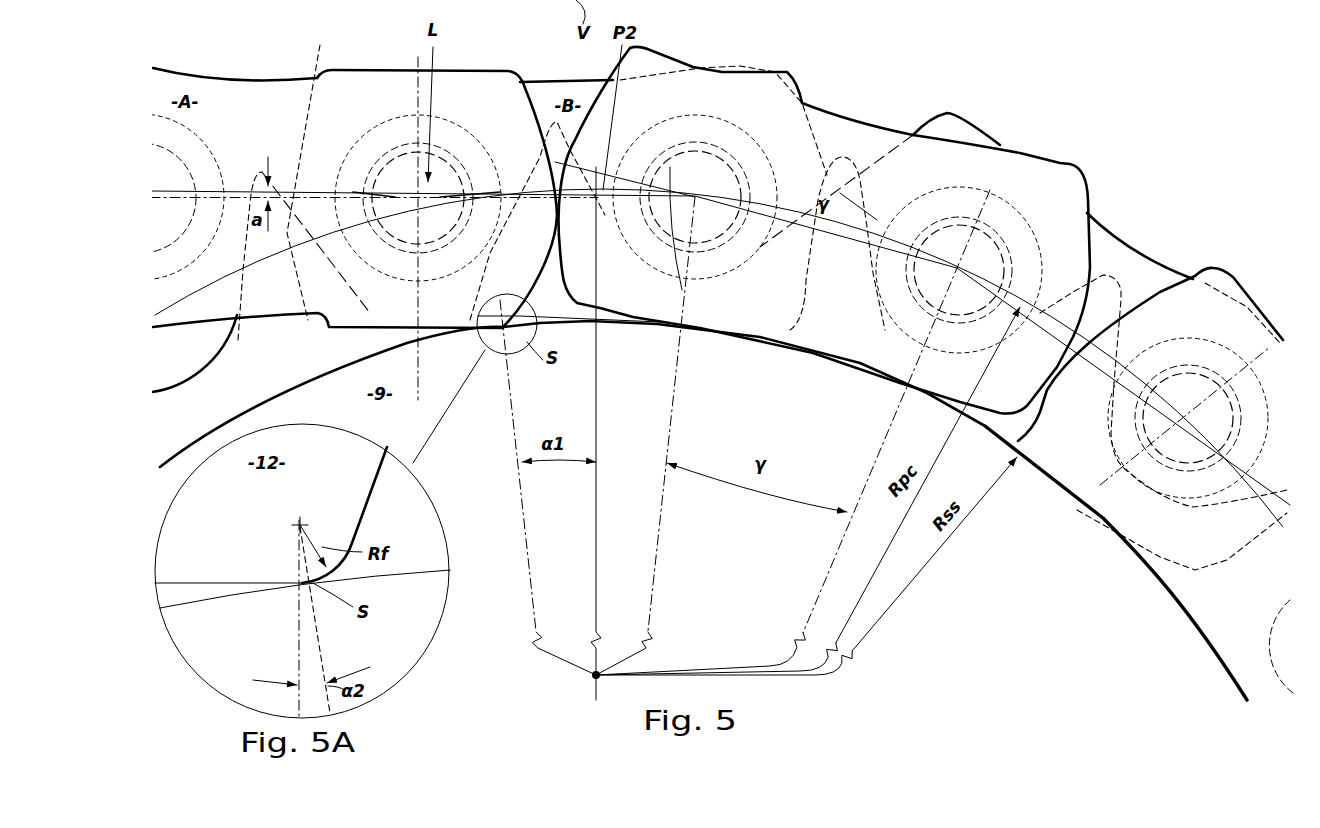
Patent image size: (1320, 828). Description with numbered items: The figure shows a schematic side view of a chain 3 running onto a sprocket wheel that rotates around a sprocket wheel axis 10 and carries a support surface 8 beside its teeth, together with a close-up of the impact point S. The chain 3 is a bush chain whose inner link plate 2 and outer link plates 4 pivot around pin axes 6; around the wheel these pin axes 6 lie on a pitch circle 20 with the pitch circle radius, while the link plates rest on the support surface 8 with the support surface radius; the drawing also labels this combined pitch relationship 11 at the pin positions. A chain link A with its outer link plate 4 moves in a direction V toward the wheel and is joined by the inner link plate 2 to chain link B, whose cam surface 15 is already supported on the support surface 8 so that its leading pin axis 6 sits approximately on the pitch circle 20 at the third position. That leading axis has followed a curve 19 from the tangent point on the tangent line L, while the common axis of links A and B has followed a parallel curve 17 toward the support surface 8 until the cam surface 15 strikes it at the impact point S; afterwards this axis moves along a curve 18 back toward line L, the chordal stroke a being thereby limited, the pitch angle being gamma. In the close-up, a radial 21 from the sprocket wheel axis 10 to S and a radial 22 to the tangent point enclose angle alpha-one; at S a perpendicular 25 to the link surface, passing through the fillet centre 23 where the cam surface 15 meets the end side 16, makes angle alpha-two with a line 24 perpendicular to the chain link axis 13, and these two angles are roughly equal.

In FIG. 5, the inner link plate 2 is at (545, 87).
In FIG. 5, the chain 3 is at (840, 84).
In FIG. 5, the outer link plate 4 is at (198, 85).
In FIG. 5, the pin axis 6 is at (418, 200).
In FIG. 5, the support surface 8 is at (295, 383).
In FIG. 5A, the support surface 8 is at (423, 566).
In FIG. 5, the sprocket wheel axis 10 is at (593, 678).
In FIG. 5, the pitch line 11 is at (240, 187).
In FIG. 5, the chain link axis 13 is at (321, 200).
In FIG. 5A, the cam surface 15 is at (218, 580).
In FIG. 5A, the end side 16 is at (366, 486).
In FIG. 5, the curve 17 is at (397, 184).
In FIG. 5, the curve 18 is at (446, 184).
In FIG. 5, the curve 19 is at (670, 167).
In FIG. 5, the pitch circle 20 is at (192, 293).
In FIG. 5, the radial 21 is at (520, 477).
In FIG. 5, the radial 22 is at (596, 488).
In FIG. 5A, the centre of the fillet radius 23 is at (296, 521).
In FIG. 5A, the line perpendicular to the chain link axis 24 is at (297, 663).
In FIG. 5A, the perpendicular 25 is at (323, 663).